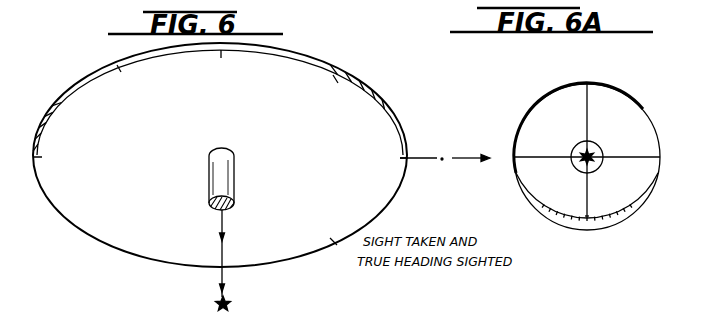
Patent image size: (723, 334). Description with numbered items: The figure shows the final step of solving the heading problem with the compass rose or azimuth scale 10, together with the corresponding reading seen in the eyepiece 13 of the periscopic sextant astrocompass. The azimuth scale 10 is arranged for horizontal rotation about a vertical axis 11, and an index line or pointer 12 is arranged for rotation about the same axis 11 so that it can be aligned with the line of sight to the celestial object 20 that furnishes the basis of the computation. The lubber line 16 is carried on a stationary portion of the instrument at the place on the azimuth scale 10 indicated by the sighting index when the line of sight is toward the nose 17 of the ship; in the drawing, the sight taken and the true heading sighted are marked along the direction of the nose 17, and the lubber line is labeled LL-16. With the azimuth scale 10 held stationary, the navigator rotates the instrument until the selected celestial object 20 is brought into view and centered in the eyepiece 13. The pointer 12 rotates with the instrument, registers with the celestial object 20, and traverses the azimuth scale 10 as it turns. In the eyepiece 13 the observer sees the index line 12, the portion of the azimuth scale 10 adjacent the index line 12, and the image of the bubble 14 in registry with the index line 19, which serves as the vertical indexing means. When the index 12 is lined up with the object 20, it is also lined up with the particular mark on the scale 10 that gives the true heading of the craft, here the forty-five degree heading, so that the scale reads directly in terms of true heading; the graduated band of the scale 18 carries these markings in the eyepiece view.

In FIG. 6, the azimuth scale 10 is at (50, 195).
In FIG. 6, the vertical axis 11 is at (235, 173).
In FIG. 6, the index line 12 is at (224, 220).
In FIG. 6A, the index line 12 is at (590, 109).
In FIG. 6A, the eyepiece 13 is at (650, 120).
In FIG. 6A, the bubble 14 is at (593, 142).
In FIG. 6, the lubber line 16 is at (432, 148).
In FIG. 6, the nose 17 is at (480, 148).
In FIG. 6A, the graduated scale band 18 is at (657, 178).
In FIG. 6A, the index line 19 is at (650, 155).
In FIG. 6A, the celestial object 20 is at (600, 150).
In FIG. 6A, the lubber line LL-16 is at (587, 221).